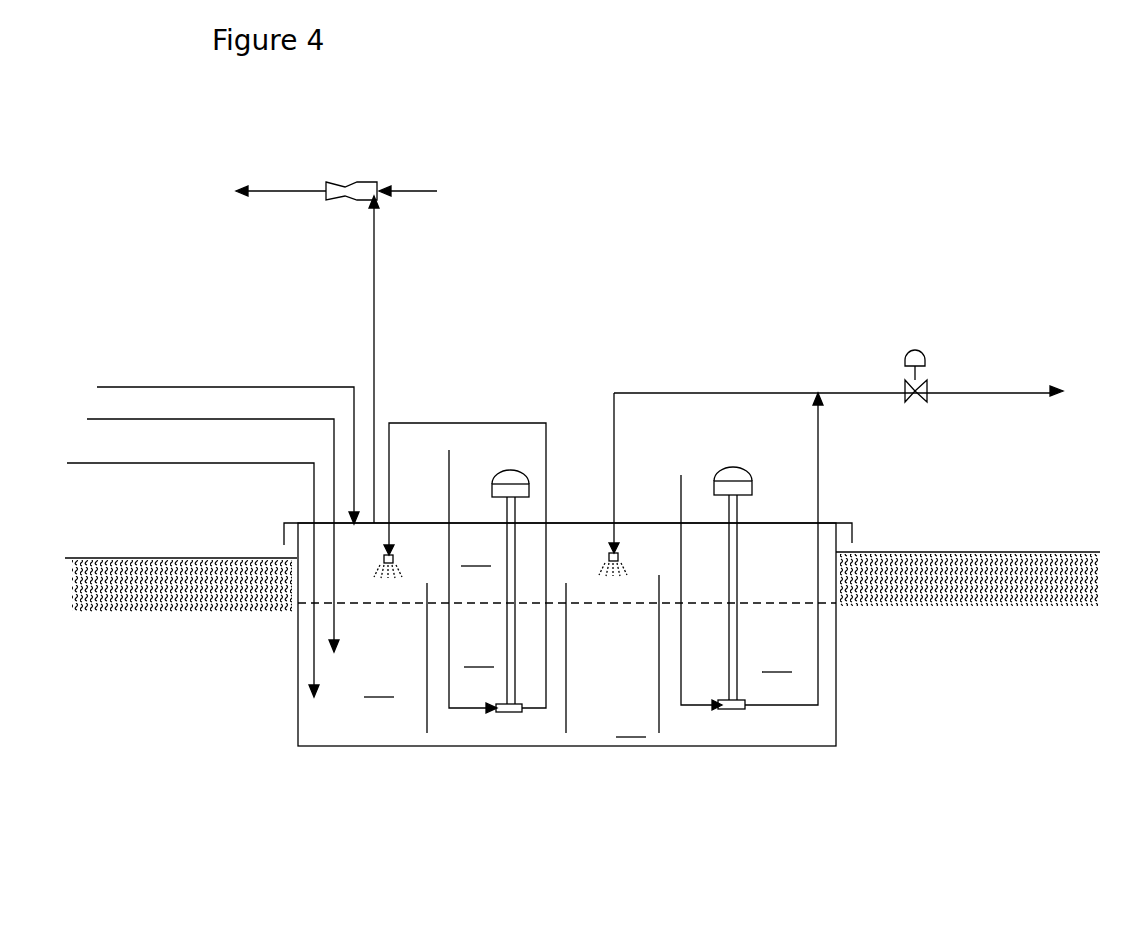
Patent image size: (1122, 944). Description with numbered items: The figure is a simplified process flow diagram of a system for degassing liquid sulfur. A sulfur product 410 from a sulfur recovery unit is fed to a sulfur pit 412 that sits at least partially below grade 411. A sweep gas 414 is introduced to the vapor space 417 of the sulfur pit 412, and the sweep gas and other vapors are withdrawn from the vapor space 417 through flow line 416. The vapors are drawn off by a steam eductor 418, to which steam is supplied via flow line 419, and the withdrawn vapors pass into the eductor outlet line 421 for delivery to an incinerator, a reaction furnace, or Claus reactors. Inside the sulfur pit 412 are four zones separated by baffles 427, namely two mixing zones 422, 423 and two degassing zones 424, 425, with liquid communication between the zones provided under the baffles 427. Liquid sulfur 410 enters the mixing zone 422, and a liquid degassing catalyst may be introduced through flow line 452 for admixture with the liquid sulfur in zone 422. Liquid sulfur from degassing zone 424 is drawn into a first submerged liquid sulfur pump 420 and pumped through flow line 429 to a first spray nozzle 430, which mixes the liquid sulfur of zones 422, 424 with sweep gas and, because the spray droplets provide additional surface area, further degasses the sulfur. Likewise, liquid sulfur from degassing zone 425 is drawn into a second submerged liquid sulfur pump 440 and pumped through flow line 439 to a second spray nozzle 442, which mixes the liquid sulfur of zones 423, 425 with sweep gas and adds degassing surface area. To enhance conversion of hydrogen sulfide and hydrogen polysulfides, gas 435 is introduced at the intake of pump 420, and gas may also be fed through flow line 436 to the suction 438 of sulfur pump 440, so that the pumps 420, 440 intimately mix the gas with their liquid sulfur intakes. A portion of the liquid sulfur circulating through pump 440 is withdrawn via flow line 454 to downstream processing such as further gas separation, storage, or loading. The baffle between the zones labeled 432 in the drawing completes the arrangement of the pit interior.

The sulfur product 410 is at (75, 466).
The grade 411 is at (130, 556).
The sulfur pit 412 is at (297, 720).
The sweep gas 414 is at (201, 386).
The flow line 416 is at (380, 294).
The vapor space 417 is at (476, 557).
The steam eductor 418 is at (357, 181).
The flow line 419 is at (412, 198).
The first submerged liquid sulfur pump 420 is at (496, 472).
The eductor outlet line 421 is at (267, 198).
The mixing zone 422 is at (379, 688).
The mixing zone 423 is at (631, 728).
The degassing zone 424 is at (479, 658).
The degassing zone 425 is at (777, 663).
The baffles 427 is at (425, 735).
The flow line 429 is at (513, 421).
The first spray nozzle 430 is at (393, 554).
The baffle 432 is at (497, 713).
The gas 435 is at (447, 462).
The flow line 436 is at (679, 489).
The suction 438 is at (719, 710).
The flow line 439 is at (757, 396).
The second submerged liquid sulfur pump 440 is at (728, 468).
The second spray nozzle 442 is at (607, 544).
The flow line 452 is at (213, 424).
The flow line 454 is at (986, 396).